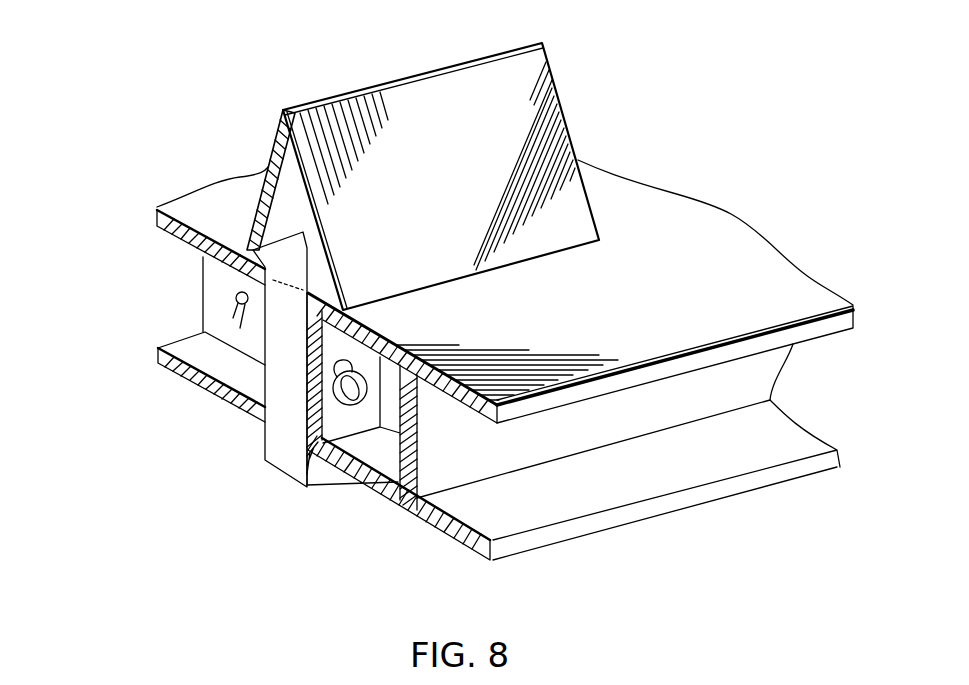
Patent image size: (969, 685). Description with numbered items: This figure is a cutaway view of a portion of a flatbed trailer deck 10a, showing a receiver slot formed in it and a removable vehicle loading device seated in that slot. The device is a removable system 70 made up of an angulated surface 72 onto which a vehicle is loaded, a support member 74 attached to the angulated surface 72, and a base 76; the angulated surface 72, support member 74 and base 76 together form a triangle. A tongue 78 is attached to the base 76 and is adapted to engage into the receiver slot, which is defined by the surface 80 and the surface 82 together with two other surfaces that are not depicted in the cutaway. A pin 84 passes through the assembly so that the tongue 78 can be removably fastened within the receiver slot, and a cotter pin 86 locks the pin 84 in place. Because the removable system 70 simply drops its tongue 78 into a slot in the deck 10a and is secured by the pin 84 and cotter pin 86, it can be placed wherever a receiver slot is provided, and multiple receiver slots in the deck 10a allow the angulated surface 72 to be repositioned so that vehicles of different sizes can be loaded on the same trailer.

The removable system 70 is at (136, 252).
The angulated surface 72 is at (517, 82).
The support member 74 is at (276, 137).
The base 76 is at (203, 280).
The tongue 78 is at (287, 403).
The surface 80 is at (228, 386).
The surface 82 is at (288, 412).
The pin 84 is at (367, 390).
The cotter pin 86 is at (222, 297).
The deck 10a is at (712, 247).